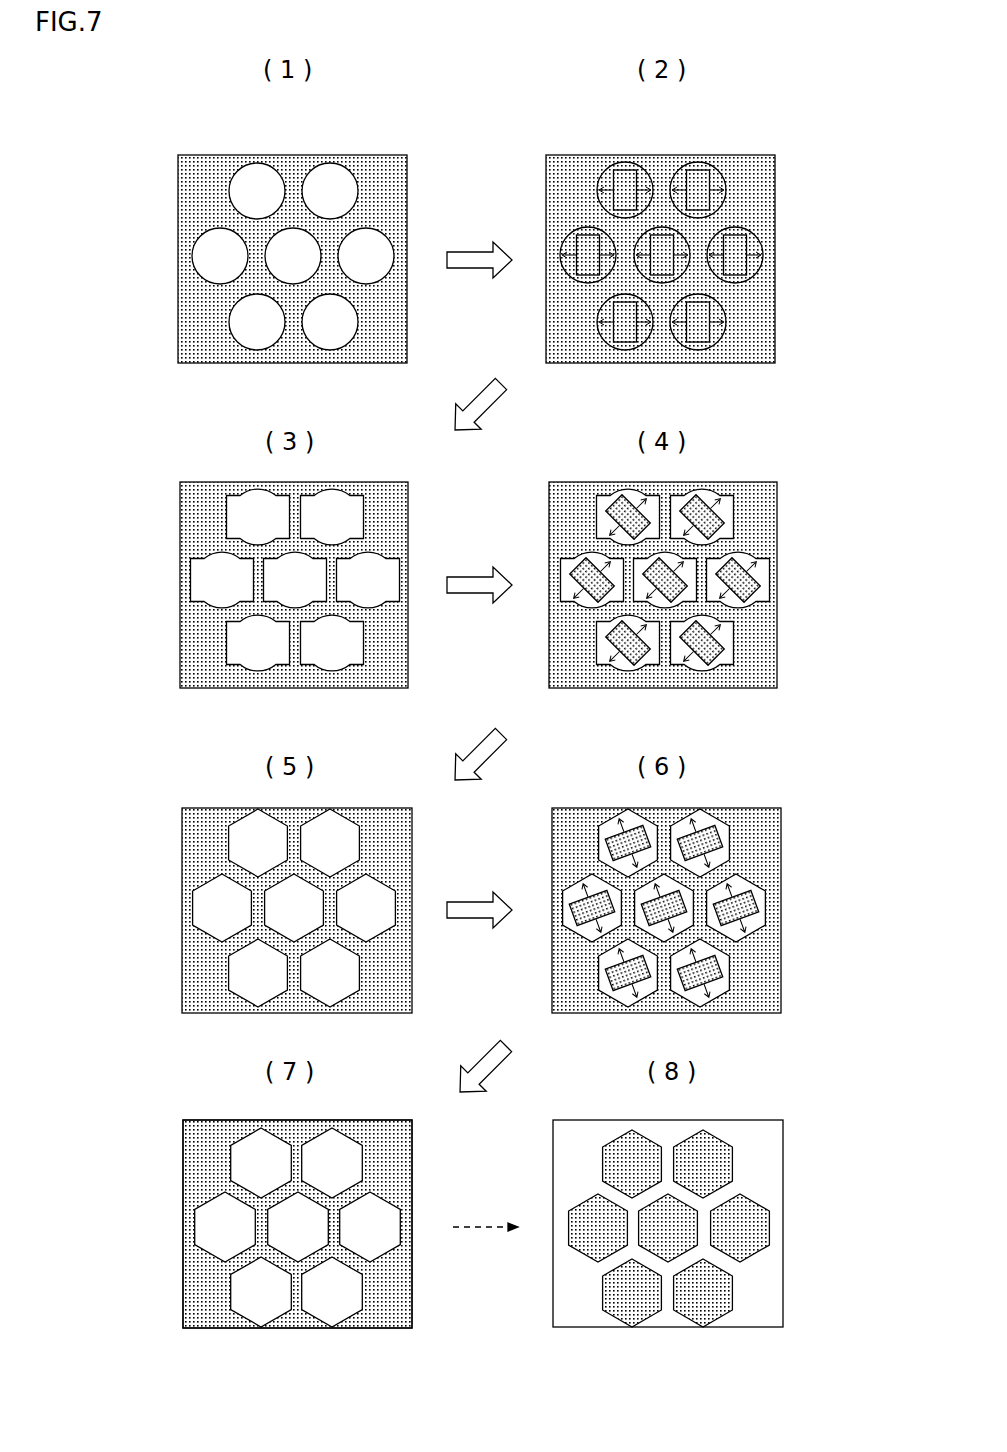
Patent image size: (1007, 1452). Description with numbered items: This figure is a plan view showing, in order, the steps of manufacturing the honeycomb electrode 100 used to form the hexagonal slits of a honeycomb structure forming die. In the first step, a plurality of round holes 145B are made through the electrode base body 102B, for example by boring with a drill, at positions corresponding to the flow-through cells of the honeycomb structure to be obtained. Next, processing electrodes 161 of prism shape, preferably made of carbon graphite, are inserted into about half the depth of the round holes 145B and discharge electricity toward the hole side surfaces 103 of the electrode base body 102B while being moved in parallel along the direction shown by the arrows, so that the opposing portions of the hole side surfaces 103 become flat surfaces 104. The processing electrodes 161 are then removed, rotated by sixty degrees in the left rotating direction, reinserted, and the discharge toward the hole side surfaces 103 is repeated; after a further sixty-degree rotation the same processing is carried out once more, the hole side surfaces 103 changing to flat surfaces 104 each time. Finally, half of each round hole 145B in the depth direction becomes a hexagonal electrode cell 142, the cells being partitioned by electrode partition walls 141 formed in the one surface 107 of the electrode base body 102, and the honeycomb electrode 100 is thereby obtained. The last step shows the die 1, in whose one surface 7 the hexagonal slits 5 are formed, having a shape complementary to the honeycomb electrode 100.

The die 1 is at (711, 1205).
The slits 5 is at (697, 1205).
The one surface 7 is at (757, 1222).
The honeycomb electrode 100 is at (288, 1224).
The electrode base body 102 is at (188, 1172).
The electrode base body 102B is at (178, 193).
The hole side surfaces 103 is at (397, 258).
The flat surfaces 104 is at (233, 523).
The one surface 107 is at (188, 1135).
The electrode partition walls 141 is at (363, 1262).
The electrode cells 142 is at (237, 1292).
The round holes 145B is at (300, 160).
The processing electrodes 161 is at (660, 352).